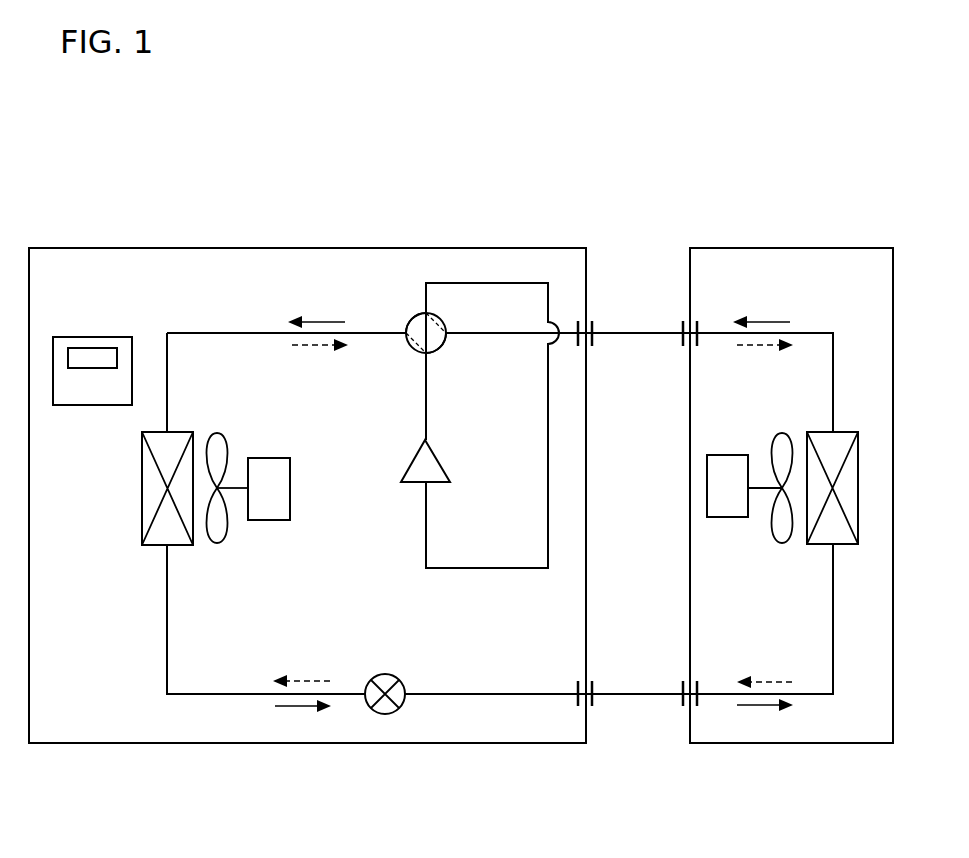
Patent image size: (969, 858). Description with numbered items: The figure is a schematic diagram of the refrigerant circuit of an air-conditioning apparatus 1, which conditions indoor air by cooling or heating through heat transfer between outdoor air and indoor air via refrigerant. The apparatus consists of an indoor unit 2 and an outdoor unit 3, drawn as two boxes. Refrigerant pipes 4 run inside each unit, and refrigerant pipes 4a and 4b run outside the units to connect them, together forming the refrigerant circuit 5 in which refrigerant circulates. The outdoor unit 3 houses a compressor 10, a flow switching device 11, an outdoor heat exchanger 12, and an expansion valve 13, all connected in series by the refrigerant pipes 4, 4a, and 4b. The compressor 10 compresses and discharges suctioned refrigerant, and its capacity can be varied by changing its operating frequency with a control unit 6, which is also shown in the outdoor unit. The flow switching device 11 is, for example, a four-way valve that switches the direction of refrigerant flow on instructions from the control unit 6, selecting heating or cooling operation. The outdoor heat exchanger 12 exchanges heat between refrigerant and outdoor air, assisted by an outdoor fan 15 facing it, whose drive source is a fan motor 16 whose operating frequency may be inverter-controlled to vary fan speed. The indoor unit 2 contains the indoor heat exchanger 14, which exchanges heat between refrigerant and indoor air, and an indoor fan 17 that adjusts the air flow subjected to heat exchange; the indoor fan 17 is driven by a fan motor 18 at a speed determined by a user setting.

The air-conditioning apparatus 1 is at (662, 216).
The indoor unit 2 is at (798, 745).
The outdoor unit 3 is at (343, 745).
The refrigerant pipes 4 is at (236, 333).
The refrigerant pipe 4a is at (645, 333).
The refrigerant pipe 4b is at (642, 697).
The refrigerant circuit 5 is at (191, 324).
The control unit 6 is at (116, 337).
The compressor 10 is at (440, 462).
The flow switching device 11 is at (414, 319).
The outdoor heat exchanger 12 is at (150, 545).
The expansion valve 13 is at (386, 674).
The indoor heat exchanger 14 is at (847, 545).
The outdoor fan 15 is at (216, 545).
The fan motor 16 is at (270, 458).
The indoor fan 17 is at (782, 545).
The fan motor 18 is at (729, 455).